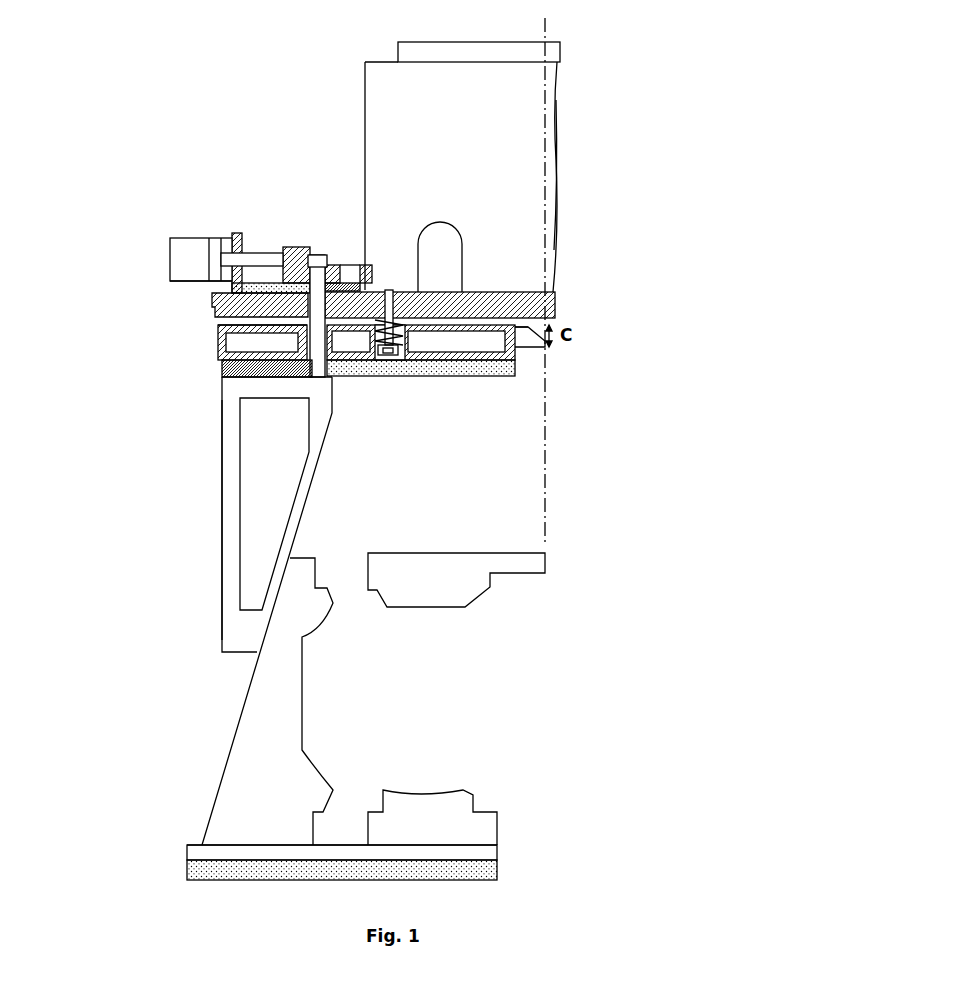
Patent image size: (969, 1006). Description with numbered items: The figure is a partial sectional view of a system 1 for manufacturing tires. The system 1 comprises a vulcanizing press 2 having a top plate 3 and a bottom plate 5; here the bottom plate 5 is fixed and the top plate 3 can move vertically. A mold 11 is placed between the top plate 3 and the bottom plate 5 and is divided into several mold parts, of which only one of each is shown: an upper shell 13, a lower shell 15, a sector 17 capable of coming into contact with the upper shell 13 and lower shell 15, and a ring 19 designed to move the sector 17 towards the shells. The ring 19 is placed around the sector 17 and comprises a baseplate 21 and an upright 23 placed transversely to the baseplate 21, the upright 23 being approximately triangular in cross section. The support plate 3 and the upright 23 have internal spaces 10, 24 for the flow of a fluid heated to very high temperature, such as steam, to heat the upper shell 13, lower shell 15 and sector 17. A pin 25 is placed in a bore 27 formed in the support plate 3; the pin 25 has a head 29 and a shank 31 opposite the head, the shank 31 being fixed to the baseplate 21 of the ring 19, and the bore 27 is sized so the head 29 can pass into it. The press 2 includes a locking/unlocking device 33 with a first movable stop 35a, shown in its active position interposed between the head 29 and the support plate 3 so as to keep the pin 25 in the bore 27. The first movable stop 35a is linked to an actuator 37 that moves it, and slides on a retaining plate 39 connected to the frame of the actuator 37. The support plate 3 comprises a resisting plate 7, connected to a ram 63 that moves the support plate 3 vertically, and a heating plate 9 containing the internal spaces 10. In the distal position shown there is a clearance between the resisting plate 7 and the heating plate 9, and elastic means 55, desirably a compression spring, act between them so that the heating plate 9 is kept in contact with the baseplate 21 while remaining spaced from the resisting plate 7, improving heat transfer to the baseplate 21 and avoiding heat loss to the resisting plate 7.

The system for manufacturing tires 1 is at (205, 157).
The vulcanizing press 2 is at (563, 155).
The top plate 3 is at (620, 368).
The bottom plate 5 is at (497, 872).
The resisting plate 7 is at (555, 308).
The heating plate 9 is at (515, 353).
The internal spaces 10 is at (445, 343).
The mold 11 is at (100, 450).
The upper shell 13 is at (469, 580).
The lower shell 15 is at (475, 832).
The sector 17 is at (292, 699).
The ring 19 is at (172, 575).
The baseplate 21 is at (222, 360).
The upright 23 is at (222, 460).
The internal space 24 is at (255, 545).
The pin 25 is at (327, 273).
The bore 27 is at (212, 313).
The head 29 is at (298, 260).
The shank 31 is at (325, 373).
The locking/unlocking device 33 is at (150, 212).
The first movable stop 35a is at (372, 265).
The actuator 37 is at (215, 254).
The retaining plate 39 is at (232, 287).
The elastic means 55 is at (400, 318).
The ram 63 is at (555, 225).